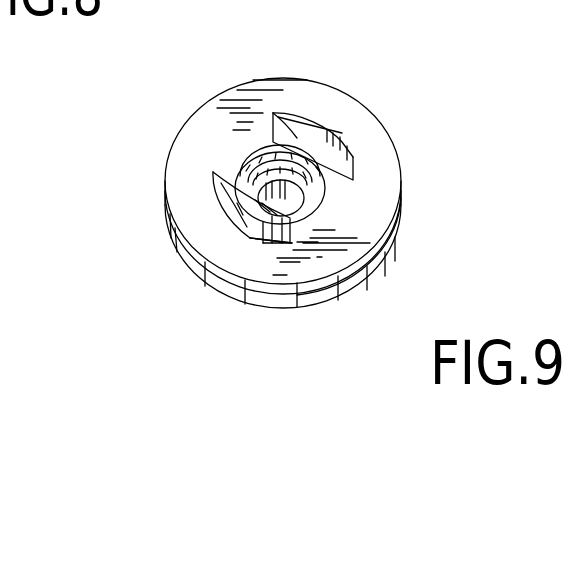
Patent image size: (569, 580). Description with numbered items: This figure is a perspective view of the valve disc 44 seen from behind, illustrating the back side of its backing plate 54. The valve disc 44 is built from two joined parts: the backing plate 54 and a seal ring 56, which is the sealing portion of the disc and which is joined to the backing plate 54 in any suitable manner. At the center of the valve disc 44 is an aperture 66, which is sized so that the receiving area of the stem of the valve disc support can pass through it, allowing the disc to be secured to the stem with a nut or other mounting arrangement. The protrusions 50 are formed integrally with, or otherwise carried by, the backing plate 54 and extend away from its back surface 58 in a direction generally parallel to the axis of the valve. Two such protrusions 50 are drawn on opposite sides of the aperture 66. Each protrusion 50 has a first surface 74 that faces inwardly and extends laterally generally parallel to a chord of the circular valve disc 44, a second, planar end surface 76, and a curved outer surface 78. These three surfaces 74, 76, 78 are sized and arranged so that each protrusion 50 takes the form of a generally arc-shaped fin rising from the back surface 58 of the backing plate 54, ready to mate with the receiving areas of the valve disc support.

The valve disc 44 is at (392, 245).
The protrusions 50 is at (346, 141).
The backing plate 54 is at (208, 138).
The seal ring 56 is at (323, 302).
The back surface 58 is at (366, 204).
The aperture 66 is at (275, 188).
The first surface 74 is at (273, 113).
The second and planar end surface 76 is at (328, 118).
The curved outer surface 78 is at (258, 244).